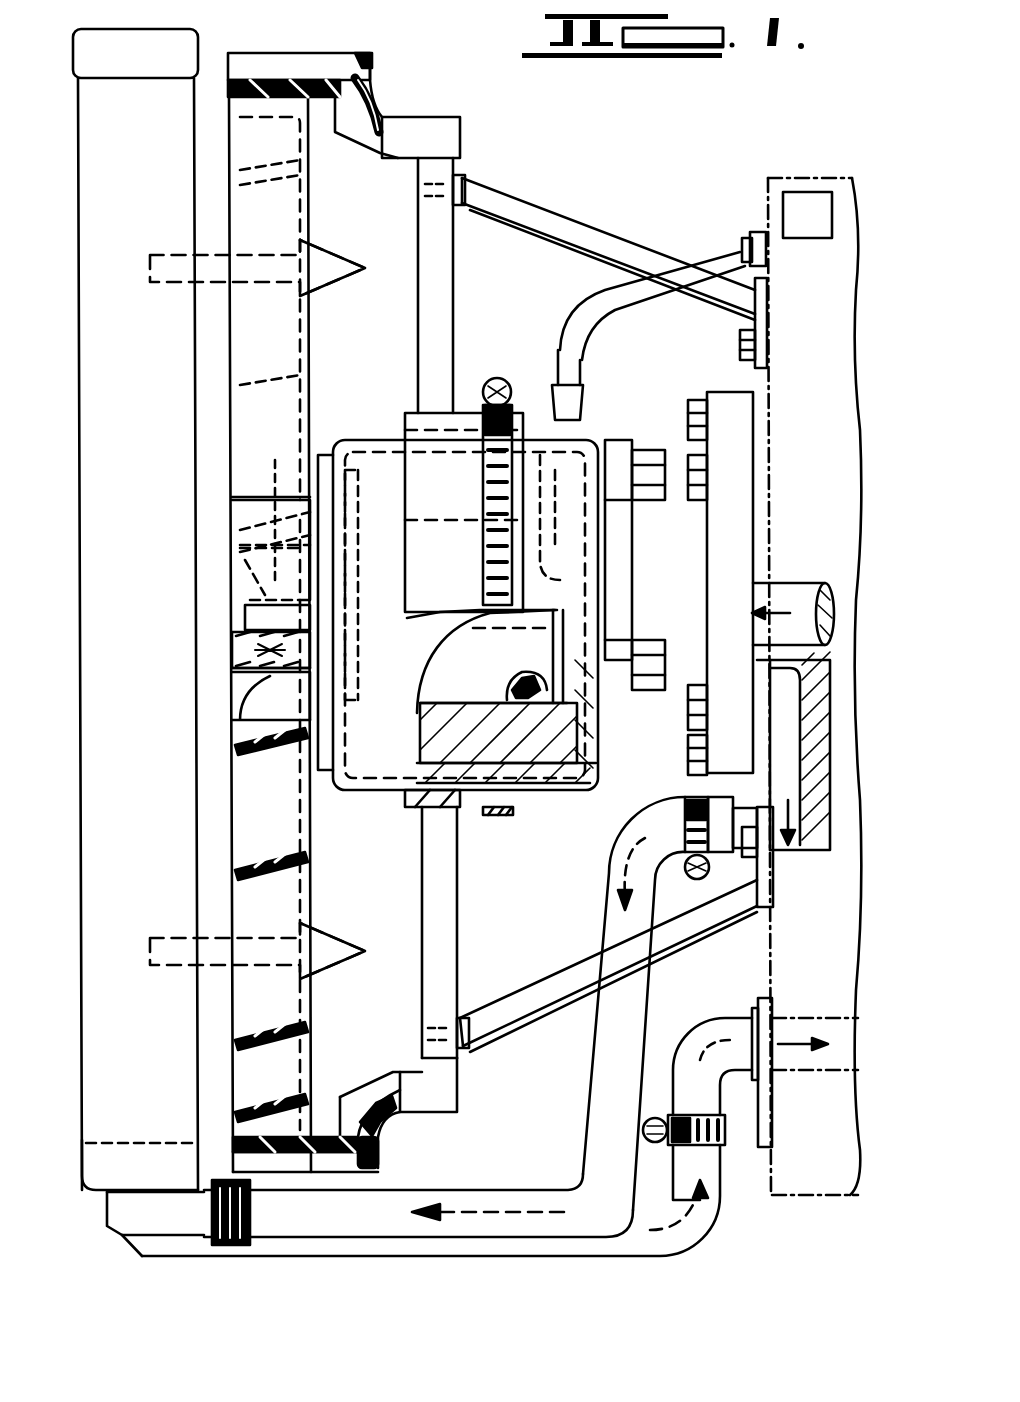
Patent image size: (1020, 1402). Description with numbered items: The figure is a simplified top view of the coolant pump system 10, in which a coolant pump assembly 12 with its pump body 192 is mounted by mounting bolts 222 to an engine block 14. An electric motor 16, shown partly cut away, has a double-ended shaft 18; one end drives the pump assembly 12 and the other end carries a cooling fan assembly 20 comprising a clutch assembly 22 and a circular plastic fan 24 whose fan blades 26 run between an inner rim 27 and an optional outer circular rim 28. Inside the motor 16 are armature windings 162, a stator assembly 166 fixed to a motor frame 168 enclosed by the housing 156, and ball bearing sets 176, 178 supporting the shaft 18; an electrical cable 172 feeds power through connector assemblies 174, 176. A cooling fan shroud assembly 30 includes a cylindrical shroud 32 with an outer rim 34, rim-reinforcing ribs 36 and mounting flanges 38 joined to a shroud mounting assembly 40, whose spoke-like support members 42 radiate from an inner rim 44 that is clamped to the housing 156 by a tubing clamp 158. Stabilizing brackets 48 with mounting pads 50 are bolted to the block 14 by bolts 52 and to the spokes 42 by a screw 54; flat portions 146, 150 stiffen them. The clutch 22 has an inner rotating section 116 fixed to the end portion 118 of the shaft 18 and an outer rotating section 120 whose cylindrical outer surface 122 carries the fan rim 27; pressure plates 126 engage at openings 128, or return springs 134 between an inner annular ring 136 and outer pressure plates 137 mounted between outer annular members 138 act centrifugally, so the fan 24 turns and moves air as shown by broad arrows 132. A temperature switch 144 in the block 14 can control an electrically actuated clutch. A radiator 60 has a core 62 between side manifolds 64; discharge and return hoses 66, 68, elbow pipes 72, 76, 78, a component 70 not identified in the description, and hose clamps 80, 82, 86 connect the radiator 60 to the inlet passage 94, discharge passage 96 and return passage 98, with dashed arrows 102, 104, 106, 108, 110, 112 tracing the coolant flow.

The coolant pump system 10 is at (652, 152).
The coolant pump assembly 12 is at (690, 398).
The engine block 14 is at (814, 686).
The electric motor 16 is at (540, 368).
The double-ended shaft 18 is at (458, 594).
The cooling fan assembly 20 is at (322, 432).
The clutch assembly 22 is at (205, 742).
The circular plastic fan 24 is at (312, 882).
The fan blades 26 is at (312, 380).
The inner rim 27 is at (266, 758).
The outer circular rim 28 is at (298, 1098).
The cooling fan shroud assembly 30 is at (392, 178).
The cylindrical shroud 32 is at (374, 90).
The outer rim 34 is at (320, 80).
The rim-reinforcing ribs 36 is at (258, 53).
The mounting flanges 38 is at (420, 117).
The shroud mounting assembly 40 is at (474, 230).
The spoke-like support members 42 is at (418, 338).
The inner rim 44 is at (478, 814).
The stabilizing brackets 48 is at (560, 215).
The mounting pads 50 is at (768, 306).
The bolts 52 is at (740, 348).
The screw 54 is at (466, 186).
The radiator 60 is at (100, 1068).
The core 62 is at (138, 634).
The side manifolds 64 is at (175, 1196).
The discharge hose 66 is at (600, 886).
The return hose 68 is at (738, 1202).
The fitting 70 is at (706, 800).
The elbow discharge return pipe 72 is at (708, 1032).
The elbow pipe 76 is at (208, 1190).
The elbow pipe 78 is at (112, 1236).
The hose clamp 80 is at (686, 814).
The hose clamp 82 is at (728, 1138).
The hose clamp 86 is at (232, 1246).
The coolant pump inlet passage 94 is at (798, 590).
The coolant pump discharge passage 96 is at (826, 798).
The radiator return passage 98 is at (818, 1020).
The dashed arrow 102 is at (816, 612).
The dashed arrow 104 is at (822, 694).
The dashed arrow 106 is at (612, 854).
The dashed arrow 108 is at (475, 1262).
The dashed arrow 110 is at (648, 1264).
The dashed arrow 112 is at (790, 1062).
The inner rotating section 116 is at (245, 580).
The end portion 118 is at (245, 618).
The outer rotating section 120 is at (232, 518).
The cylindrical outer surface 122 is at (250, 490).
The pressure plates 126 is at (225, 545).
The openings 128 is at (275, 510).
The broad arrows 132 is at (160, 252).
The return spring 134 is at (242, 660).
The inner annular ring 136 is at (240, 636).
The outer pressure plates 137 is at (245, 690).
The outer annular members 138 is at (240, 676).
The temperature switch 144 is at (810, 192).
The flat portion 146 is at (500, 992).
The flat portion 150 is at (522, 1012).
The housing 156 is at (548, 797).
The tubing clamp 158 is at (496, 378).
The armature windings 162 is at (492, 661).
The stator assembly 166 is at (364, 792).
The motor frame 168 is at (476, 772).
The electrical cable 172 is at (580, 334).
The electrical connector assembly 174 is at (745, 238).
The ball bearing set 176 is at (586, 392).
The ball bearing set 178 is at (552, 526).
The pump body 192 is at (732, 582).
The mounting bolts 222 is at (688, 420).